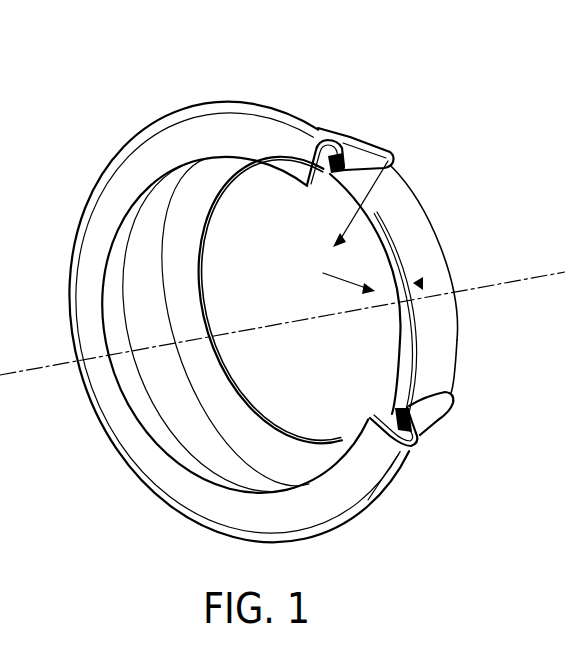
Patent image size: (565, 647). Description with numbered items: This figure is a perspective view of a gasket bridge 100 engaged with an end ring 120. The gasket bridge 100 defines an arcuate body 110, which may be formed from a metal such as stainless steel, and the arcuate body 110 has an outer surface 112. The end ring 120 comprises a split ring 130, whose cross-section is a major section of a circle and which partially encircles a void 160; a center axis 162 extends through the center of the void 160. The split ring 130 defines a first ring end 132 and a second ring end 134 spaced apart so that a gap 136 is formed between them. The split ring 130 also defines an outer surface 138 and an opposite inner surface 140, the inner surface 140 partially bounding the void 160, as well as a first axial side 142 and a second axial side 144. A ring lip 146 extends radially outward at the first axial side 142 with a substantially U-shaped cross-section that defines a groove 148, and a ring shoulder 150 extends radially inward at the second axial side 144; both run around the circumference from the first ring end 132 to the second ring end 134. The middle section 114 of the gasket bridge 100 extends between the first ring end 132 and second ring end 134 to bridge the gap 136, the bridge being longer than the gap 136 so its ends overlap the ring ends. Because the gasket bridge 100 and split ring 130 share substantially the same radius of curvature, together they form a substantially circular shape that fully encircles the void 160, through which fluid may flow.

The gasket bridge 100 is at (450, 267).
The arcuate body 110 is at (426, 245).
The outer surface 112 is at (440, 343).
The middle section 114 is at (440, 280).
The end ring 120 is at (105, 207).
The split ring 130 is at (93, 237).
The first ring end 132 is at (360, 150).
The second ring end 134 is at (427, 423).
The gap 136 is at (356, 287).
The outer surface 138 is at (326, 127).
The inner surface 140 is at (127, 307).
The first axial side 142 is at (218, 107).
The second axial side 144 is at (413, 453).
The ring lip 146 is at (245, 130).
The groove 148 is at (367, 173).
The ring shoulder 150 is at (207, 187).
The void 160 is at (420, 207).
The center axis 162 is at (32, 383).